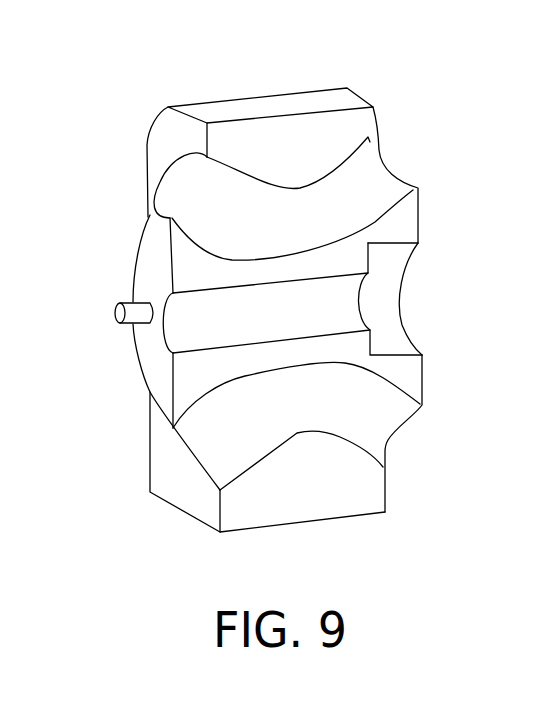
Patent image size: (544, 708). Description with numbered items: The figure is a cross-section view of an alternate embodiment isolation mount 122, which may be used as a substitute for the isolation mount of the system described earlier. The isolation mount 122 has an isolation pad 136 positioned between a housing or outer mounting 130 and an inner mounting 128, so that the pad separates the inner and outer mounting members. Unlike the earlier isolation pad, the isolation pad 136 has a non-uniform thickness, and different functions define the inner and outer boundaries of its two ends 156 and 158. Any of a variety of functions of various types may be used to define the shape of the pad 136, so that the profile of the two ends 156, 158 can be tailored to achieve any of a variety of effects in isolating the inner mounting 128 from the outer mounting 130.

The isolation mount 122 is at (114, 123).
The outer mounting 130 is at (302, 138).
The isolation pad 136 is at (363, 192).
The inner mounting 128 is at (403, 218).
The end of isolation pad 158 is at (375, 418).
The end of isolation pad 156 is at (212, 450).